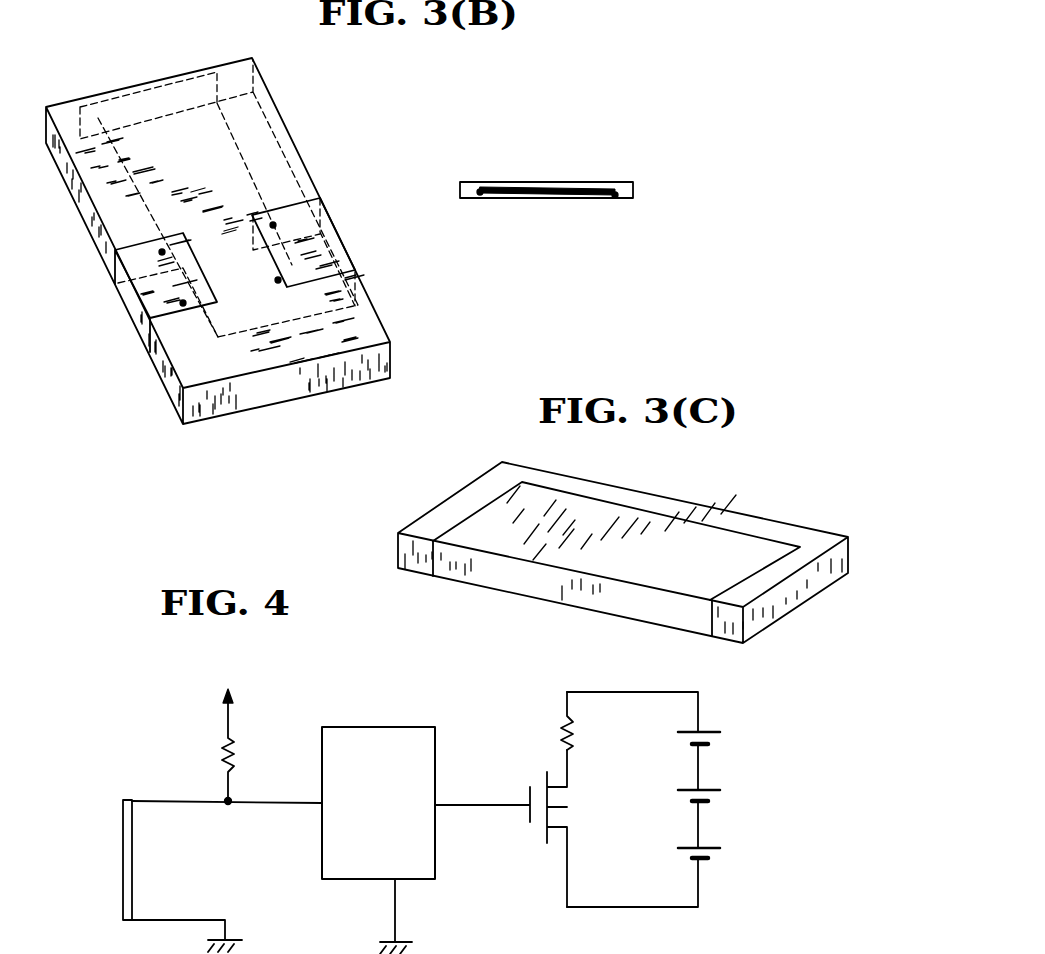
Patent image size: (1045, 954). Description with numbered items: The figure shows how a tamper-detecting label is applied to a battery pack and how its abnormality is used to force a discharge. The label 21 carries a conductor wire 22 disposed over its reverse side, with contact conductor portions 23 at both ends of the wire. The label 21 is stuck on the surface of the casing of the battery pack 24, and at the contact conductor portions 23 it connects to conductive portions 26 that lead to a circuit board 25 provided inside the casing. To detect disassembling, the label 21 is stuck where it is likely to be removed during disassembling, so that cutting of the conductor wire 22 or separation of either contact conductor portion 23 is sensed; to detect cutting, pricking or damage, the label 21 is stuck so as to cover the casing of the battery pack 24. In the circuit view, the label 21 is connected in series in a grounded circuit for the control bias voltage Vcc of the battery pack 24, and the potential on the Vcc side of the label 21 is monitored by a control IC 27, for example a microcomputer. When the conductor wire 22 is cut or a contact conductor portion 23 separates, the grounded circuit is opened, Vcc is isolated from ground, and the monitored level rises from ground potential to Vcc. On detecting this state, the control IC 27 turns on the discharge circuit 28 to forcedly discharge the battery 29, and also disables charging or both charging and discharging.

The label 21 is at (342, 250).
In FIG. 3C, the label 21 is at (523, 587).
In FIG. 4, the label 21 is at (132, 860).
The conductor wire 22 is at (547, 186).
The contact conductor portion 23 is at (480, 196).
The battery pack 24 is at (283, 121).
In FIG. 3C, the battery pack 24 is at (690, 503).
The circuit board 25 is at (131, 90).
The conductive portion 26 is at (130, 182).
In FIG. 4, the control IC 27 is at (377, 727).
In FIG. 4, the discharge circuit 28 is at (523, 793).
In FIG. 4, the battery 29 is at (717, 797).